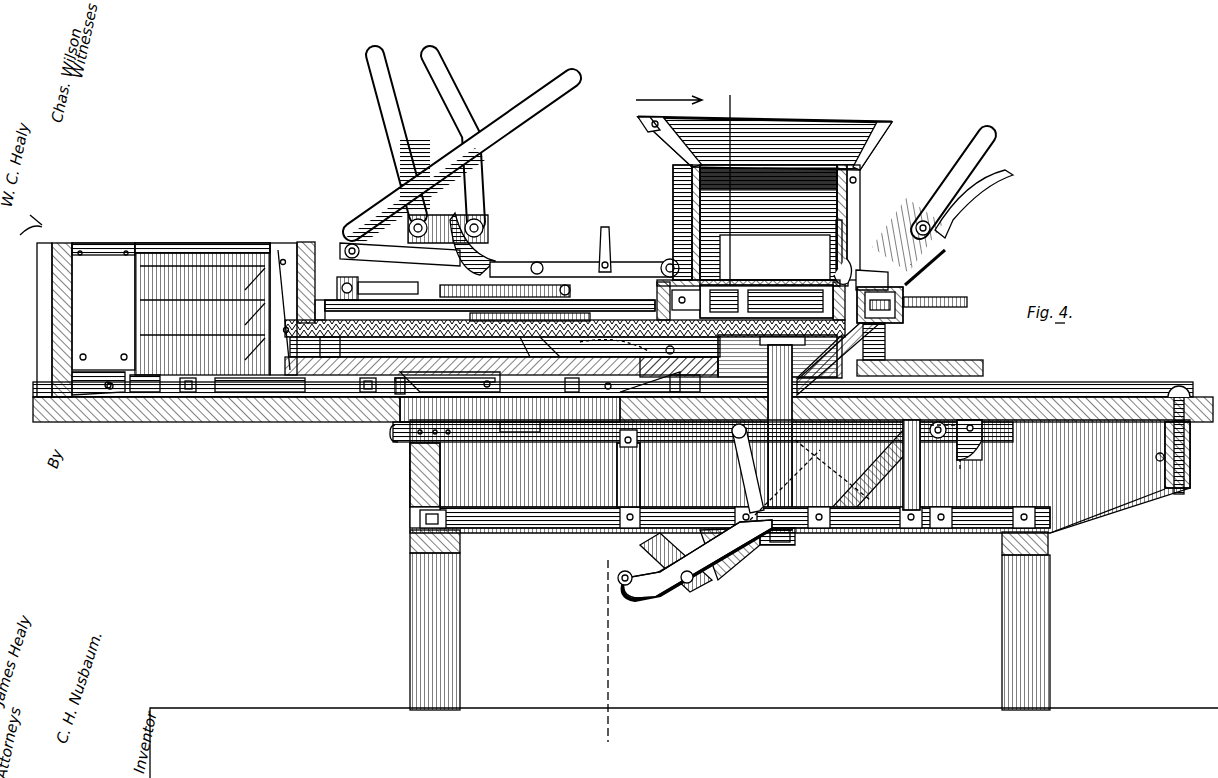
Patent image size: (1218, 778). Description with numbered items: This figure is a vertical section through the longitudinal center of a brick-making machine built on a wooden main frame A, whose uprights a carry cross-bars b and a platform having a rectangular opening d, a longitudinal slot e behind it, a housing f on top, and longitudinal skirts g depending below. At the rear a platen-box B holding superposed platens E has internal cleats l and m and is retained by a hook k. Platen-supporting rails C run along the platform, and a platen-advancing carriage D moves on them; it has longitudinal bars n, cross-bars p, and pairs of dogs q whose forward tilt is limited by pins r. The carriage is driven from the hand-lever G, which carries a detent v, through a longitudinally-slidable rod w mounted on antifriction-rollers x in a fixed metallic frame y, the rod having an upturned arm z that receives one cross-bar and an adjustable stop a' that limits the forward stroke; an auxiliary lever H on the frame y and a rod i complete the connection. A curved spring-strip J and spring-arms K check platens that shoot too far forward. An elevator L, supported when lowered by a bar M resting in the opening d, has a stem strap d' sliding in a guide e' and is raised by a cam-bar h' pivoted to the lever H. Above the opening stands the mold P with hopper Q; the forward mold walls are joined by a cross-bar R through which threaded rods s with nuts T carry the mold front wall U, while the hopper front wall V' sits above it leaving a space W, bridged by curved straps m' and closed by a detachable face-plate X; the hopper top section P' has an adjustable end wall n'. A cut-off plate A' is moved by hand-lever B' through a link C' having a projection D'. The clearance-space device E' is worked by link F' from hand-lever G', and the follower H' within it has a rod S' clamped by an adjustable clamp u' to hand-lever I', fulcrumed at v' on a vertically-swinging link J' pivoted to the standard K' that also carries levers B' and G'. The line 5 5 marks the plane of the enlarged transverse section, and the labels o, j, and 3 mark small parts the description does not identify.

The platen-supporting rails C is at (623, 410).
The platen-box B is at (43, 320).
The cleats m is at (103, 306).
The dogs q is at (86, 392).
The platens E is at (559, 309).
The cleats l is at (304, 243).
The pins r is at (533, 436).
The pin o is at (357, 381).
The mold P is at (481, 310).
The platen-advancing carriage D is at (260, 385).
The longitudinal bars n is at (358, 385).
The cross-bars p is at (445, 385).
The hand-lever G' is at (384, 135).
The hand-lever B' is at (456, 138).
The hand-lever I' is at (458, 163).
The vertically-swinging link J' is at (400, 259).
The fulcrum v' is at (339, 261).
The adjustable clamp u' is at (361, 288).
The hook k is at (898, 455).
The link F' is at (501, 244).
The link C' is at (584, 253).
The upwardly-extending projection D' is at (615, 238).
The rod S' is at (492, 286).
The top section P' is at (765, 188).
The hopper Q is at (700, 208).
The end wall n' is at (649, 143).
The section line 5 is at (668, 418).
The front wall V' is at (830, 246).
The space W is at (858, 260).
The forwardly-curved straps m' is at (872, 264).
The face-plate X is at (766, 288).
The clearance-space device E' is at (727, 301).
The front wall U is at (785, 301).
The follower H' is at (695, 283).
The cut-off plate A' is at (770, 271).
The hand-lever G is at (953, 182).
The detent v is at (942, 227).
The nuts T is at (912, 300).
The cross-bar R is at (904, 316).
The elevator L is at (777, 356).
The strap d' is at (810, 359).
The opening d is at (823, 356).
The longitudinally-disposed bar M is at (773, 433).
The upturned arm z is at (372, 425).
The adjustable stop a' is at (399, 443).
The longitudinal skirts g is at (800, 476).
The antifriction-rollers x is at (616, 448).
The longitudinally-slidable rod w is at (700, 426).
The cam-bar h' is at (810, 480).
The spring-arms K is at (898, 465).
The standard K' is at (970, 458).
The guide e' is at (795, 542).
The fixed metallic frame y is at (862, 530).
The cross-bars b is at (410, 542).
The uprights a is at (727, 631).
The main frame A is at (1107, 520).
The threaded rods s is at (1179, 442).
The auxiliary vertically-swinging lever H is at (695, 565).
The housing f is at (330, 347).
The pin j is at (550, 347).
The rod i is at (615, 347).
The longitudinal slot e is at (677, 347).
The curved spring-strip J is at (525, 347).
The pin 3 is at (780, 536).